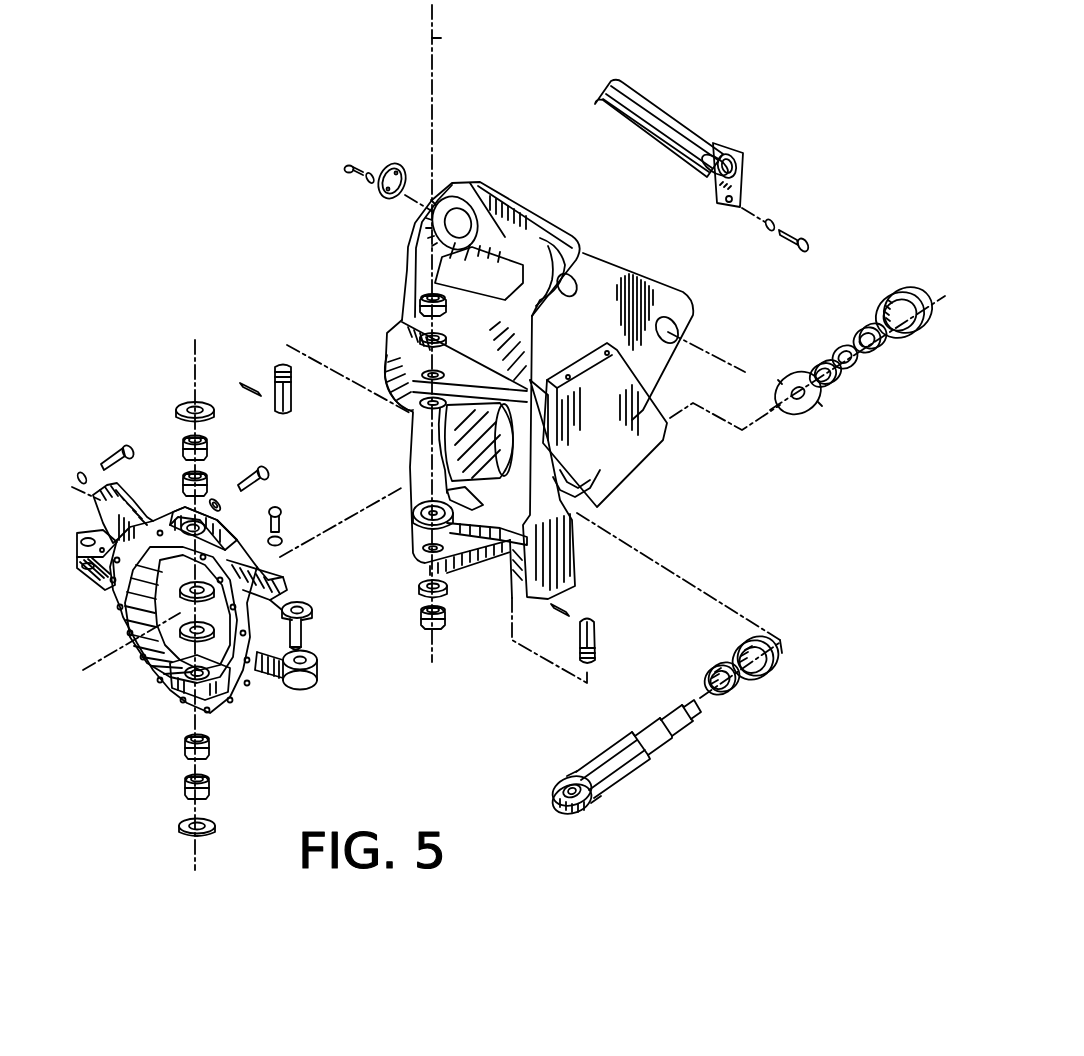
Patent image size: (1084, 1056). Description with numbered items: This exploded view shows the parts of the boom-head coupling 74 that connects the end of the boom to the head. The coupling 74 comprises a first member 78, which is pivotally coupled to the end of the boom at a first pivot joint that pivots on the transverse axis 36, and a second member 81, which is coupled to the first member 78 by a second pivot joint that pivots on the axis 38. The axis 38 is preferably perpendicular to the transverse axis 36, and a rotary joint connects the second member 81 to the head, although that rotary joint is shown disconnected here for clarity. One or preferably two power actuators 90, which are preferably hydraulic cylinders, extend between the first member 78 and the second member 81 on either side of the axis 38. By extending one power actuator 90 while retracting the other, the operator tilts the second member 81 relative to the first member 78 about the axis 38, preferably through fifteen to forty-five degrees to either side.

The axis 38 is at (441, 40).
The coupling 74 is at (343, 277).
The first member 78 is at (637, 277).
The transverse axis 36 is at (721, 341).
The power actuators 90 is at (623, 743).
The second member 81 is at (250, 690).